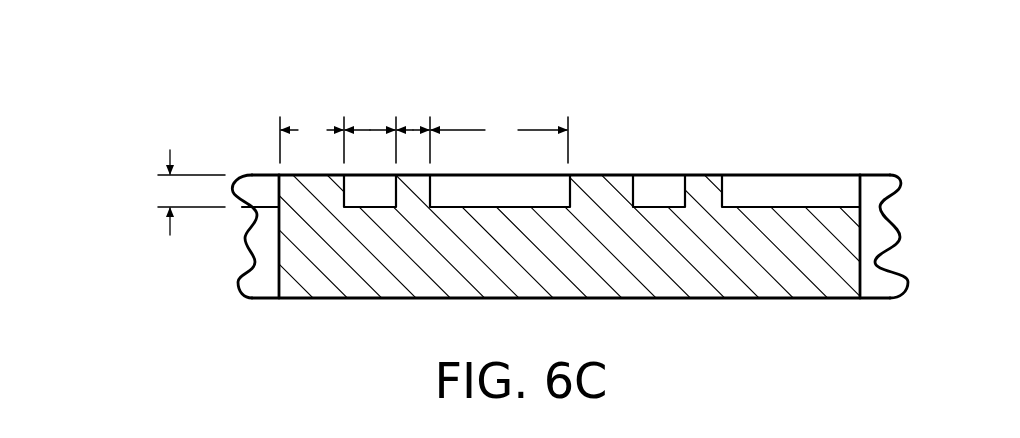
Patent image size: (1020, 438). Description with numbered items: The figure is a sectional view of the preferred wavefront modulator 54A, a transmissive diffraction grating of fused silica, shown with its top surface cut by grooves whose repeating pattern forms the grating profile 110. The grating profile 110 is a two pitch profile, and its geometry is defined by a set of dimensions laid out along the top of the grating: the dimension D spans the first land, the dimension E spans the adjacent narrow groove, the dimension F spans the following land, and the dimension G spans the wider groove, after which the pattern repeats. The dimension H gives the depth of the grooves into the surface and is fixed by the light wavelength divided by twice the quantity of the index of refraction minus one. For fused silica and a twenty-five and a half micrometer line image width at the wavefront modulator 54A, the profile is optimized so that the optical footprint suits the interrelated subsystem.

The grating profile 110 is at (280, 84).
The wavefront modulator 54A is at (767, 145).
The dimension D is at (312, 130).
The dimension E is at (370, 128).
The dimension F is at (412, 128).
The dimension G is at (499, 130).
The dimension H is at (191, 178).